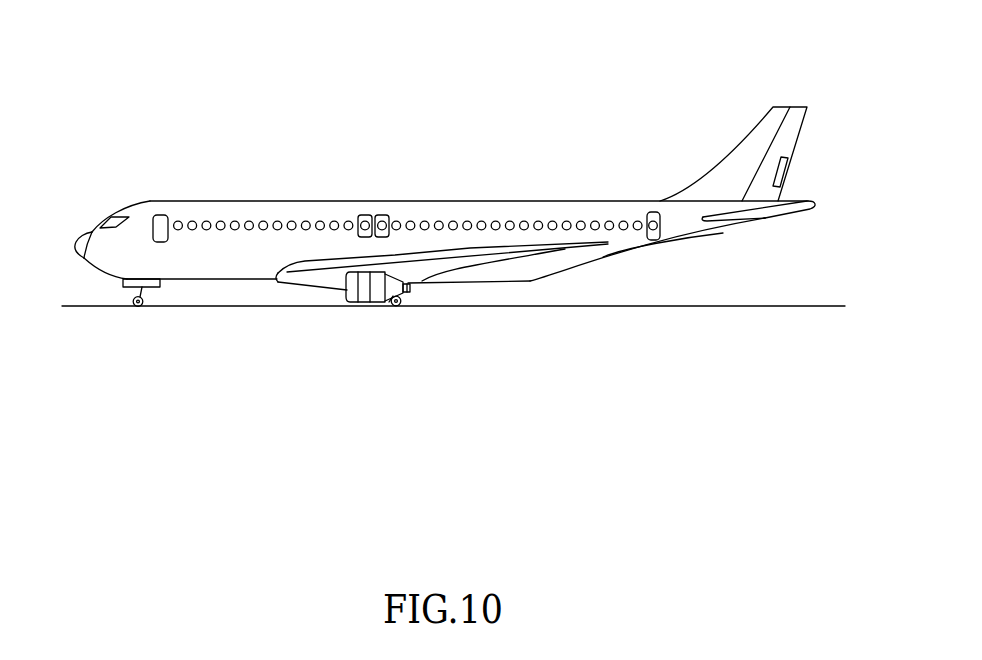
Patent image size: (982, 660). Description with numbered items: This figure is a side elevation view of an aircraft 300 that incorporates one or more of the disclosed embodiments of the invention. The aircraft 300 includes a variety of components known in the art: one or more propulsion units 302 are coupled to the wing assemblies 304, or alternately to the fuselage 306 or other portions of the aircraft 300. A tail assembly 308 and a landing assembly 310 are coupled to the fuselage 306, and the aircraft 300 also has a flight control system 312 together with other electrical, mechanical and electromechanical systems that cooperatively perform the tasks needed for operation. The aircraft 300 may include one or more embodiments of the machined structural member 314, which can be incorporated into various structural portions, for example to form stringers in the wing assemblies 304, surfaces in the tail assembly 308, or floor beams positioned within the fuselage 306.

The aircraft 300 is at (614, 49).
The propulsion unit 302 is at (350, 295).
The wing assembly 304 is at (460, 263).
The fuselage 306 is at (413, 200).
The tail assembly 308 is at (828, 171).
The landing assembly 310 is at (133, 298).
The flight control system 312 is at (97, 235).
The machined structural member 314 is at (620, 248).